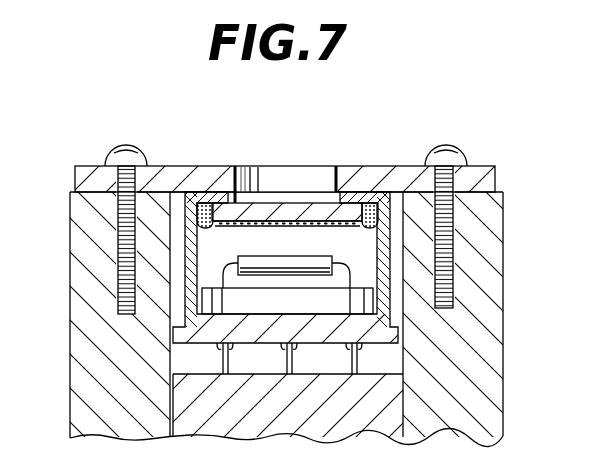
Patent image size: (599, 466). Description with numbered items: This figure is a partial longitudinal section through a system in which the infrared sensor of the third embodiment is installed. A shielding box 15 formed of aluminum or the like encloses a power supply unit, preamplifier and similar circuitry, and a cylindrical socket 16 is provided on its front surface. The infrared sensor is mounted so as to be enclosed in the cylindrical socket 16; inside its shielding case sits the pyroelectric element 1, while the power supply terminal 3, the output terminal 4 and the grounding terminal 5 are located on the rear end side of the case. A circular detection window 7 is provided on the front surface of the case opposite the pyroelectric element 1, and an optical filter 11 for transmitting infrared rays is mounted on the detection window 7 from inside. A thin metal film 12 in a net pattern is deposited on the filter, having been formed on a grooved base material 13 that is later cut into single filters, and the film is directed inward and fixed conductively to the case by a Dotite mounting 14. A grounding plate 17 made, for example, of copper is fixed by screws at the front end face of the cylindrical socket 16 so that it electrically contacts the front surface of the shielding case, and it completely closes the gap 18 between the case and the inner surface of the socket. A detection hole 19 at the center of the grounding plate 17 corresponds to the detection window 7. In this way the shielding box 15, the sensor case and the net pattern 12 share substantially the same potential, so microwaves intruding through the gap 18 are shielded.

The pyroelectric element 1 is at (287, 258).
The power supply terminal 3 is at (220, 365).
The output terminal 4 is at (285, 361).
The grounding terminal 5 is at (350, 356).
The detection window 7 is at (250, 192).
The optical filter 11 is at (304, 233).
The thin metal film 12 is at (251, 223).
The base material 13 is at (277, 206).
The Dotite mounting 14 is at (200, 203).
The shielding box 15 is at (493, 383).
The cylindrical socket 16 is at (505, 222).
The grounding plate 17 is at (377, 175).
The gap 18 is at (165, 305).
The detection hole 19 is at (337, 168).